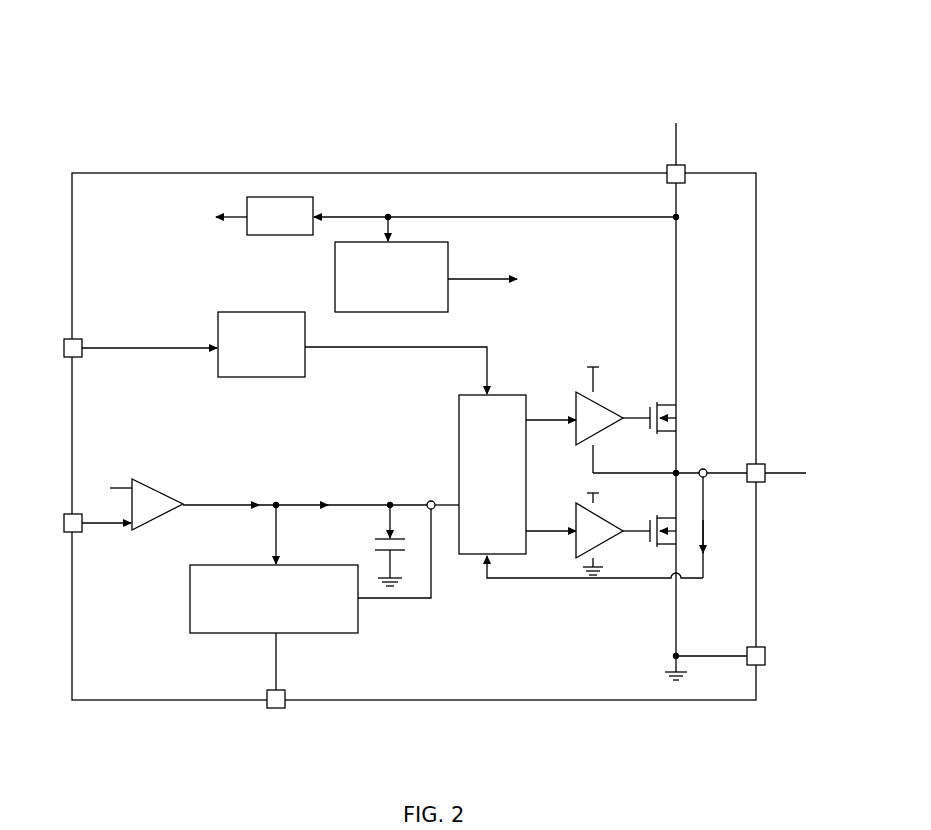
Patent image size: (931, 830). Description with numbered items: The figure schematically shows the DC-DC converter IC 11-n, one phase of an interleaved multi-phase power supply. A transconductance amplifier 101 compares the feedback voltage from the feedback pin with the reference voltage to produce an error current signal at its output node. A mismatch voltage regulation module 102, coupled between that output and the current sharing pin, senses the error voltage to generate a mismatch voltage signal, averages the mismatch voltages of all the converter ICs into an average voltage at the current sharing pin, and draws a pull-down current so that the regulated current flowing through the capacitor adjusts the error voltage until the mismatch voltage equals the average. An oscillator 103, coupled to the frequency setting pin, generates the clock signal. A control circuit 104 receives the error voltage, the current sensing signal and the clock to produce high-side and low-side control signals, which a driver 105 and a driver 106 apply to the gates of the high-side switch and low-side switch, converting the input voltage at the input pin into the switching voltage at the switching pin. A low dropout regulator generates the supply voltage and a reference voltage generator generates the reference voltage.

The DC-DC converter IC 11-n is at (680, 38).
The transconductance amplifier 101 is at (164, 473).
The mismatch voltage regulation module 102 is at (207, 634).
The oscillator 103 is at (277, 378).
The control circuit 104 is at (458, 413).
The driver 105 is at (597, 408).
The driver 106 is at (599, 524).